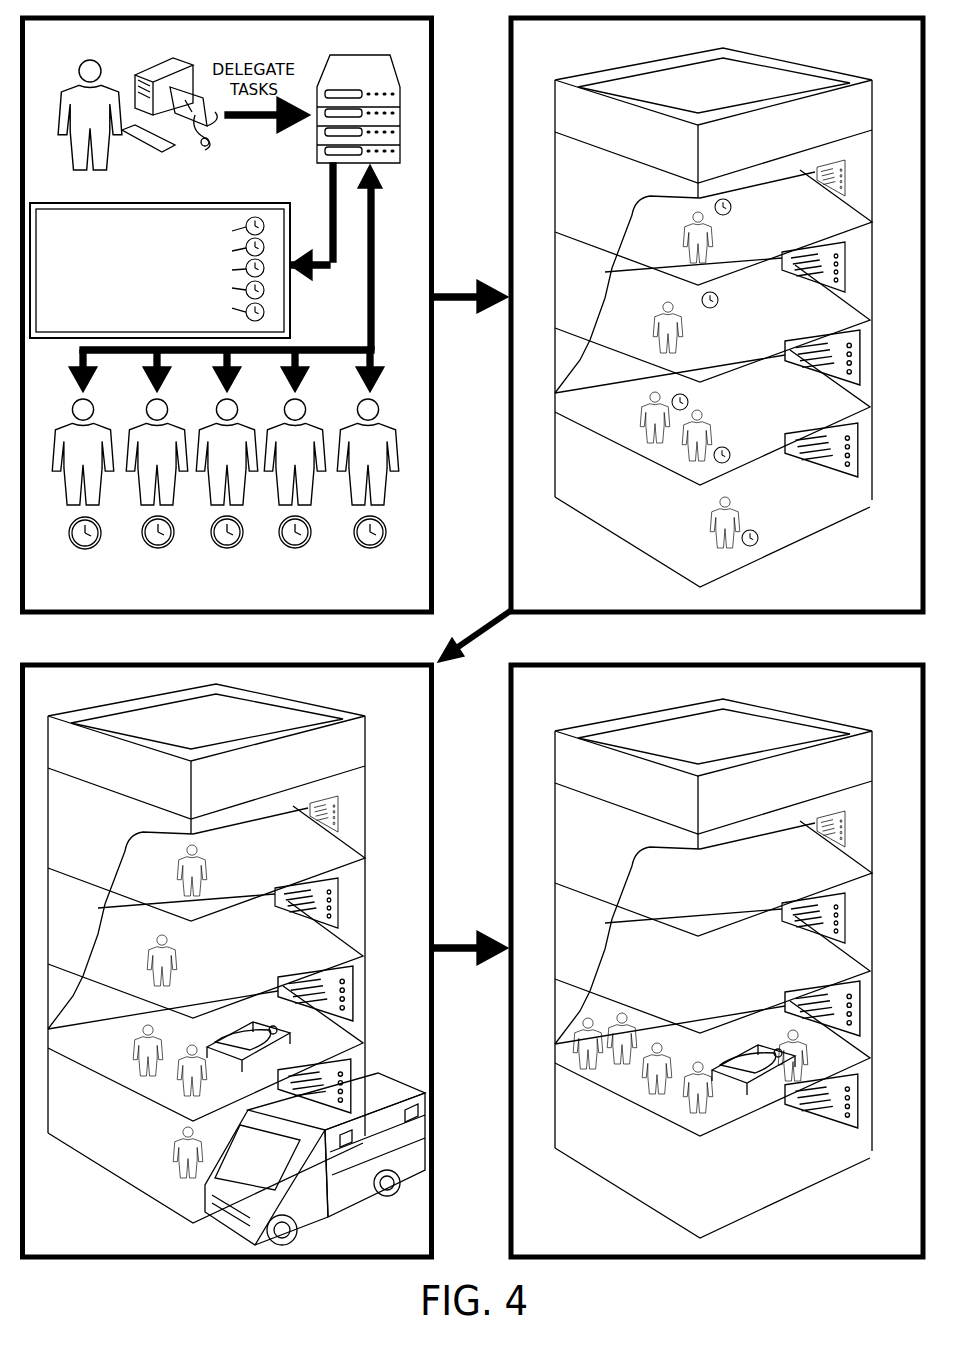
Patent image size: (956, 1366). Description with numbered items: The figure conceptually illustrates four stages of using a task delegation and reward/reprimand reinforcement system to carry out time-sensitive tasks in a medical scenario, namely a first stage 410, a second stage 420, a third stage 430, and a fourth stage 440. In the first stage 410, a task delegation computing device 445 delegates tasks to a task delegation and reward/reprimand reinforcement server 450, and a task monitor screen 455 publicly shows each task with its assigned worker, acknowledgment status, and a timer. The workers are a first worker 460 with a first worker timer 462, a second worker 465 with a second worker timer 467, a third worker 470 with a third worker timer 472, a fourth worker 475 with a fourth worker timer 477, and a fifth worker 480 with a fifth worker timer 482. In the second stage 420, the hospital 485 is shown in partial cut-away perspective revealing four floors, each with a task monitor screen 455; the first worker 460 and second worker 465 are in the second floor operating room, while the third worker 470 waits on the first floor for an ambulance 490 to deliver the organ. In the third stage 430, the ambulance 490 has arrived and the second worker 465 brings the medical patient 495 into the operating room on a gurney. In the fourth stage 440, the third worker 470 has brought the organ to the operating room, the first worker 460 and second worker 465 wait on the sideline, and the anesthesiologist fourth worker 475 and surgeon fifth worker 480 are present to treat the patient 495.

The first stage 410 is at (81, 602).
The second stage 420 is at (576, 599).
The third stage 430 is at (81, 1241).
The fourth stage 440 is at (576, 1241).
The task delegation computing device 445 is at (160, 60).
The task delegation and reward/reprimand reinforcement server 450 is at (378, 83).
The task monitor screen 455 is at (170, 202).
The first worker 460 is at (62, 437).
The first worker timer 462 is at (69, 535).
The second worker 465 is at (135, 437).
The second worker timer 467 is at (142, 535).
The third worker 470 is at (205, 437).
The third worker timer 472 is at (211, 535).
The fourth worker 475 is at (273, 437).
The fourth worker timer 477 is at (279, 535).
The fifth worker 480 is at (346, 437).
The fifth worker timer 482 is at (354, 535).
The hospital 485 is at (862, 455).
The ambulance 490 is at (357, 1200).
The medical patient 495 is at (255, 1030).